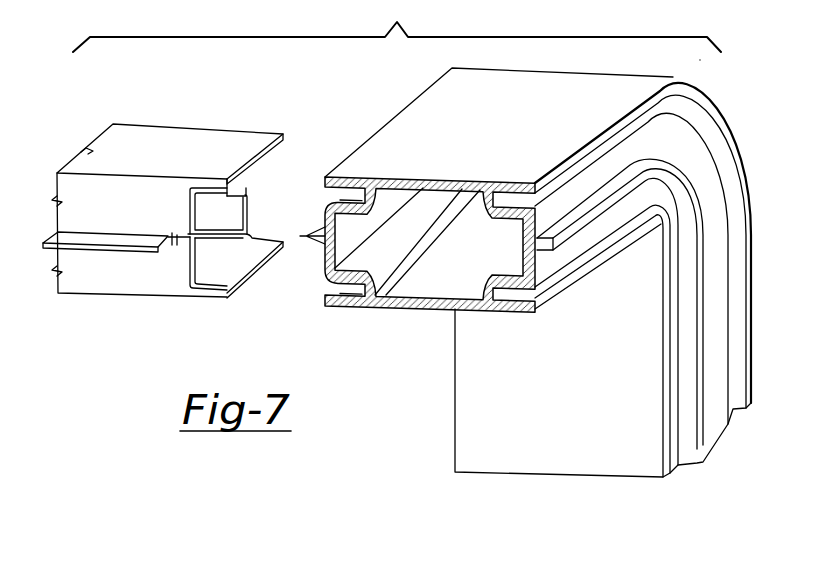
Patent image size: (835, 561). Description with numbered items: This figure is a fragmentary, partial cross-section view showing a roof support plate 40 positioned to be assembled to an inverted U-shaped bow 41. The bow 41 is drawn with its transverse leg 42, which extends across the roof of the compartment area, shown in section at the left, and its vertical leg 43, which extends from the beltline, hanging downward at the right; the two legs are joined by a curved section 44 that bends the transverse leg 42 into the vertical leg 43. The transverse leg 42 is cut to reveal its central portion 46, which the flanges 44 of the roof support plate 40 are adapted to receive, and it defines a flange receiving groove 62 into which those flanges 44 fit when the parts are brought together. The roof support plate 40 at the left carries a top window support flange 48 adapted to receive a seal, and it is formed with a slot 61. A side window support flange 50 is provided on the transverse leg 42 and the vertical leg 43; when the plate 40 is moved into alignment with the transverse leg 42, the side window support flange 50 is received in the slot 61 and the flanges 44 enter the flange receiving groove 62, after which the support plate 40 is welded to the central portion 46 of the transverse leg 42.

The roof support plate 40 is at (178, 142).
The inverted U-shaped bow 41 is at (762, 269).
The transverse leg 42 is at (525, 100).
The vertical leg 43 is at (539, 452).
The curved section / flanges 44 is at (245, 141).
The central portion 46 is at (407, 122).
The top window support flange 48 is at (112, 238).
The side window support flange 50 is at (312, 233).
The slot 61 is at (178, 238).
The flange receiving groove 62 is at (334, 193).